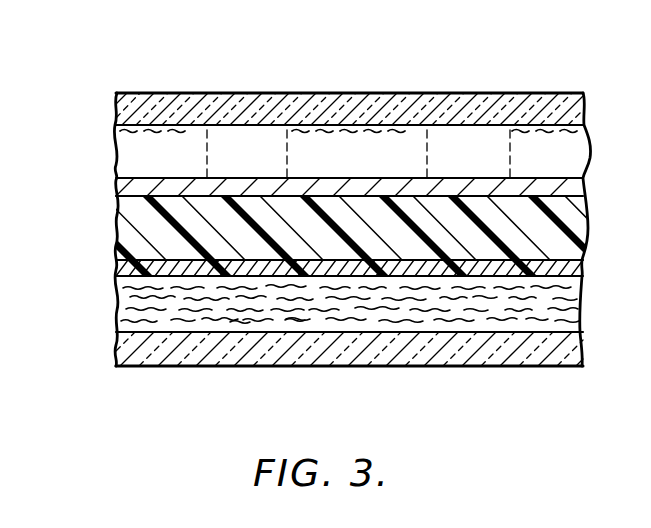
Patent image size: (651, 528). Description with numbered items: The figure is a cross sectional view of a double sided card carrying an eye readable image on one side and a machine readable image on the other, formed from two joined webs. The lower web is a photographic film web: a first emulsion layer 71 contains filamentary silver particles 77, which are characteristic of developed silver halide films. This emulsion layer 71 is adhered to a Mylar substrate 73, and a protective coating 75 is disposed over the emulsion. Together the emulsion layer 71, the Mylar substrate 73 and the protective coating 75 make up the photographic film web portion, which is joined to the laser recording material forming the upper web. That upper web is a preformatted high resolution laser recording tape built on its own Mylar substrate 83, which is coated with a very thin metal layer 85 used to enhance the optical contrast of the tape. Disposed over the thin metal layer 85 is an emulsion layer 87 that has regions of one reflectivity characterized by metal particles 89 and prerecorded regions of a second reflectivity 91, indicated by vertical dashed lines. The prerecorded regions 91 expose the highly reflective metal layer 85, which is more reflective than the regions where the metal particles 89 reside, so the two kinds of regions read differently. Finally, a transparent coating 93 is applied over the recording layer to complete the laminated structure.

The transparent coating 93 is at (117, 112).
The emulsion layer 87 is at (117, 158).
The thin metal layer 85 is at (117, 193).
The Mylar substrate 83 is at (117, 231).
The Mylar substrate 73 is at (117, 268).
The first emulsion layer 71 is at (117, 315).
The protective coating 75 is at (117, 355).
The filamentary silver particles 77 is at (293, 318).
The metal particles 89 is at (191, 130).
The regions of a second reflectivity 91 is at (252, 150).